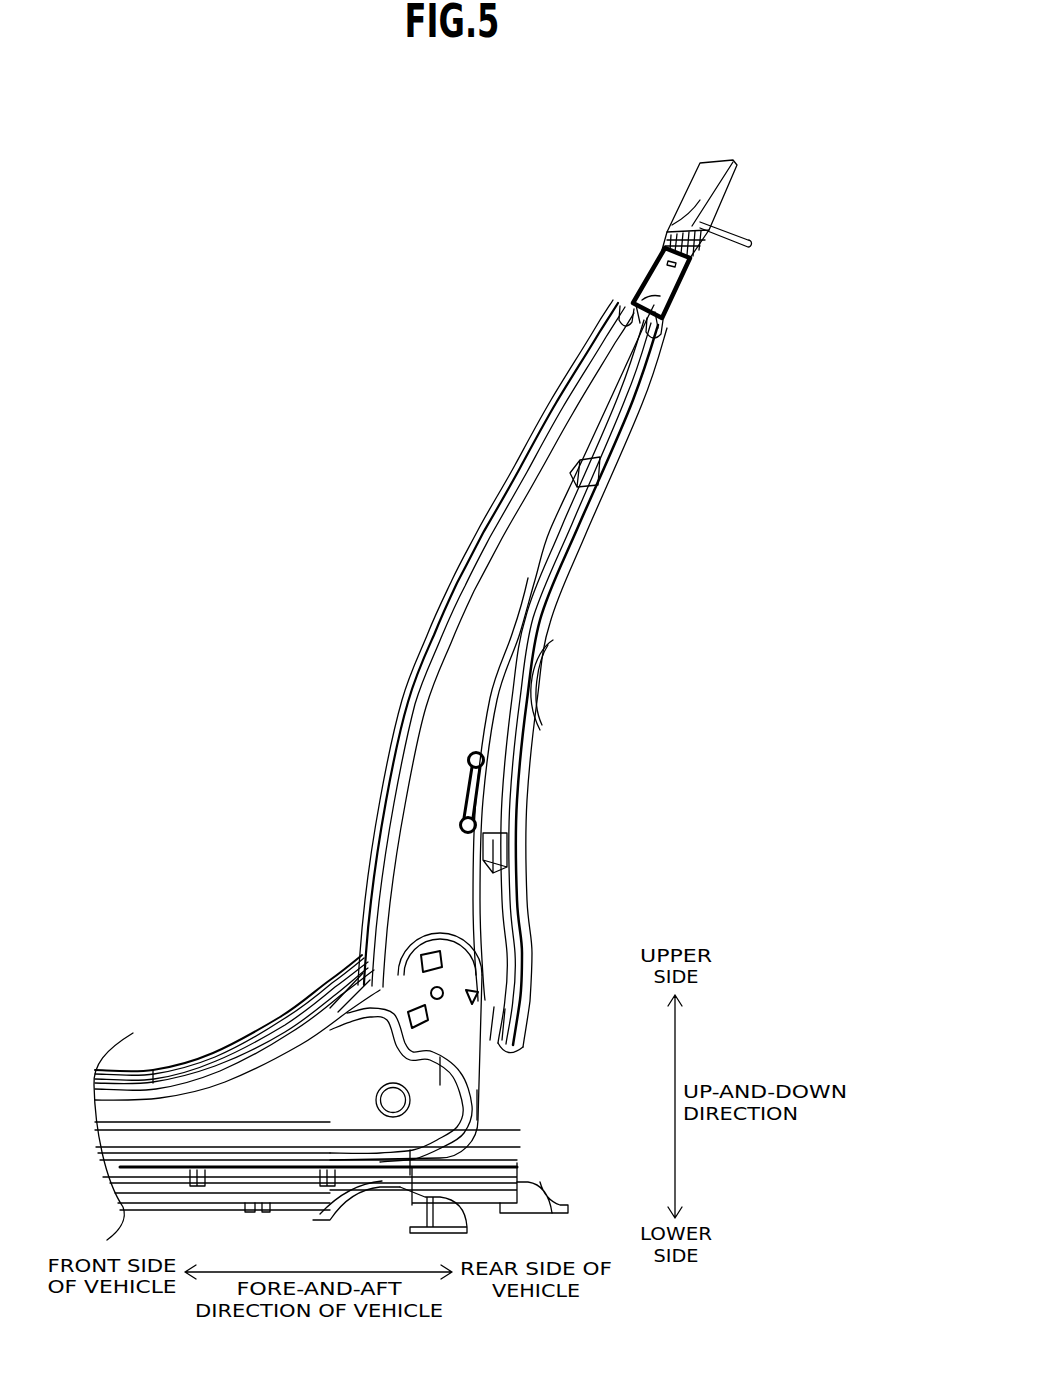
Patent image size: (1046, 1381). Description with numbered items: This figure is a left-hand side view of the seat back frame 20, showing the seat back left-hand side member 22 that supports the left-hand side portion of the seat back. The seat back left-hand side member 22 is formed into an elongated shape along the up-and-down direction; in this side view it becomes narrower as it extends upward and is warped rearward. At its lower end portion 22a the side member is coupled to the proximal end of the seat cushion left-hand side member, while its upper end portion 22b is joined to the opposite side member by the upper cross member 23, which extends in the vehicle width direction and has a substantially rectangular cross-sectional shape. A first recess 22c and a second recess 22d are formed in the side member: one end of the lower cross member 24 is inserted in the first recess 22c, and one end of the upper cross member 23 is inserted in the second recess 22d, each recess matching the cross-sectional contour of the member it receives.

The seat back frame 20 is at (646, 154).
The seat back left-hand side member 22 is at (455, 588).
The lower end portion 22a is at (523, 987).
The upper end portion 22b is at (692, 255).
The first recess 22c is at (490, 768).
The second recess 22d is at (673, 308).
The upper cross member 23 is at (690, 280).
The lower cross member 24 is at (483, 800).